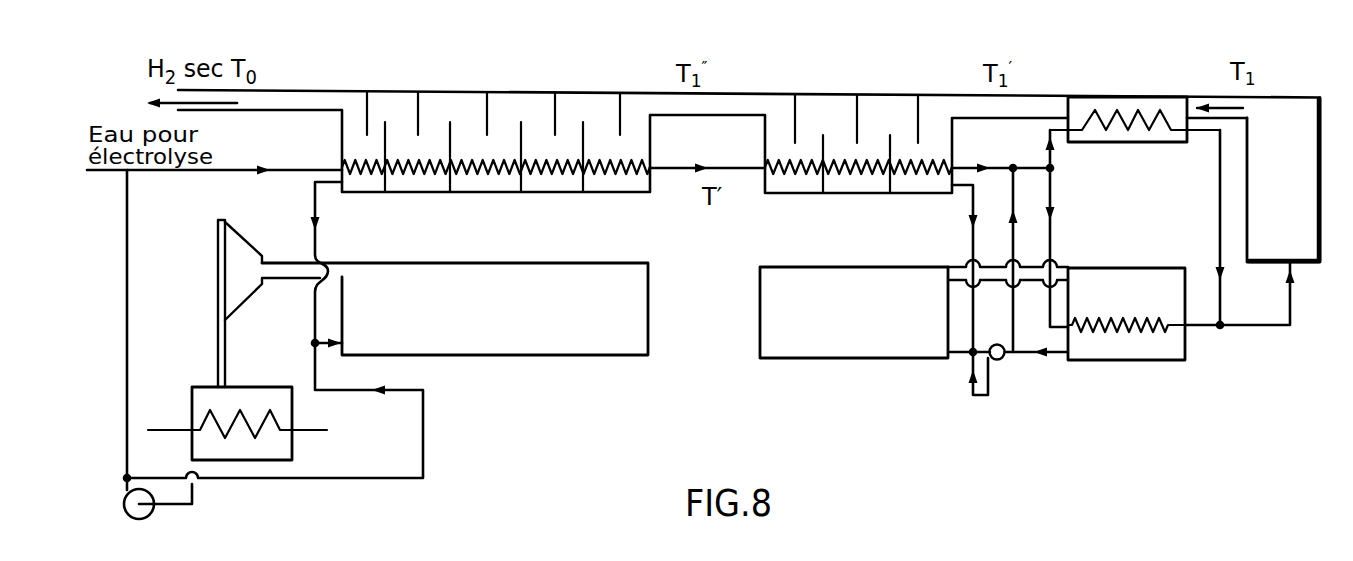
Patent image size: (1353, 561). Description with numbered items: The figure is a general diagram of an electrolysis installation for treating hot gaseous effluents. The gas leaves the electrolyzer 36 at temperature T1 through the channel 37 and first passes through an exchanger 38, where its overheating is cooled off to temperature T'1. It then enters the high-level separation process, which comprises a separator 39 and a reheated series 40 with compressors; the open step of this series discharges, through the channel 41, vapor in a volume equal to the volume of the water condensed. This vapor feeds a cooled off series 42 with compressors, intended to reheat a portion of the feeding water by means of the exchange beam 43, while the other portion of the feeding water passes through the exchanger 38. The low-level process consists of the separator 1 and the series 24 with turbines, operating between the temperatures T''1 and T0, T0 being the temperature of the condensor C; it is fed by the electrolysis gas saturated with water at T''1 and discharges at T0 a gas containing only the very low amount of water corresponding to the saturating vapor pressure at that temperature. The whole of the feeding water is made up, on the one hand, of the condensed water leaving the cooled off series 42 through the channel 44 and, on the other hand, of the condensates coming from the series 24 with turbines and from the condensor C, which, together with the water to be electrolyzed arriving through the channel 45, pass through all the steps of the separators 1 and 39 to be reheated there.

The separator 1 is at (527, 92).
The separator 39 is at (828, 93).
The channel 37 is at (1212, 96).
The exchanger 38 is at (1132, 135).
The electrolyzer 36 is at (1262, 188).
The reheated series with compressors 40 is at (875, 266).
The channel 41 is at (1055, 270).
The cooled off series with compressors 42 is at (1133, 268).
The exchange beam 43 is at (1135, 334).
The channel 44 is at (1058, 360).
The series with turbines 24 is at (508, 356).
The channel 45 is at (120, 172).
The condensor C is at (190, 407).